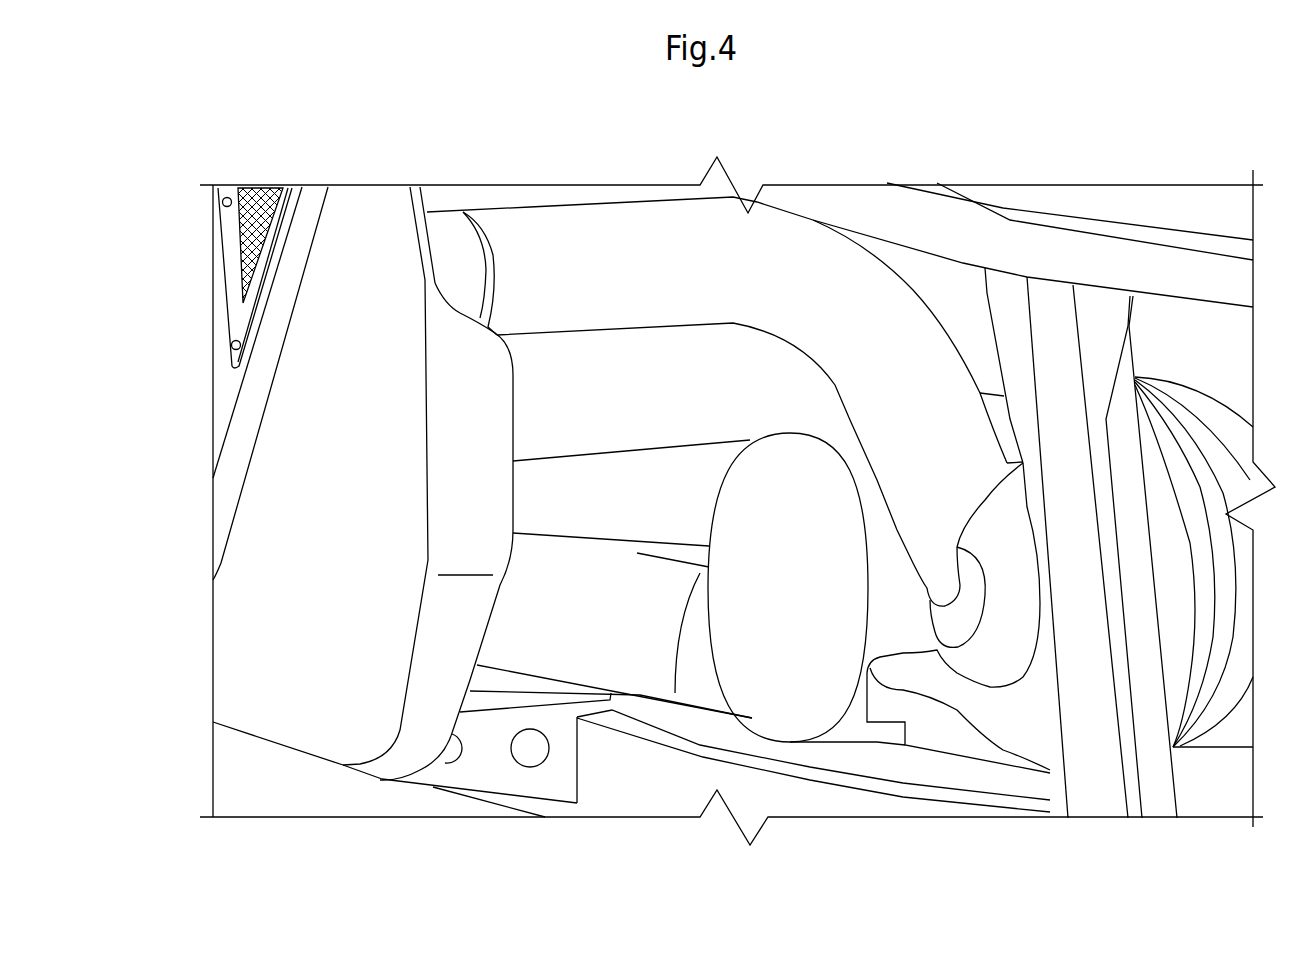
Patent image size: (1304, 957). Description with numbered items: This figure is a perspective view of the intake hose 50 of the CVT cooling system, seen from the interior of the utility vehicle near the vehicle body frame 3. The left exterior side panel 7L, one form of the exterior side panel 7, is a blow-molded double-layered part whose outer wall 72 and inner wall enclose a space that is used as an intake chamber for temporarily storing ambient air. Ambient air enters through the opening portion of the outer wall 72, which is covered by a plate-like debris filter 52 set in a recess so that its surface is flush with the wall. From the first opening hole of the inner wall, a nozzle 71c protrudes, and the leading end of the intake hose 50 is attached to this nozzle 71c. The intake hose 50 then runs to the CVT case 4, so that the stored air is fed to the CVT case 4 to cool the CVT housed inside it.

The vehicle body frame 3 is at (637, 790).
The CVT case 4 is at (990, 668).
The intake hose 50 is at (638, 237).
The debris filter 52 is at (233, 285).
The nozzle 71c is at (452, 243).
The outer wall 72 is at (245, 623).
The left exterior side panel 7L is at (236, 673).
The exterior side panel 7 is at (300, 494).